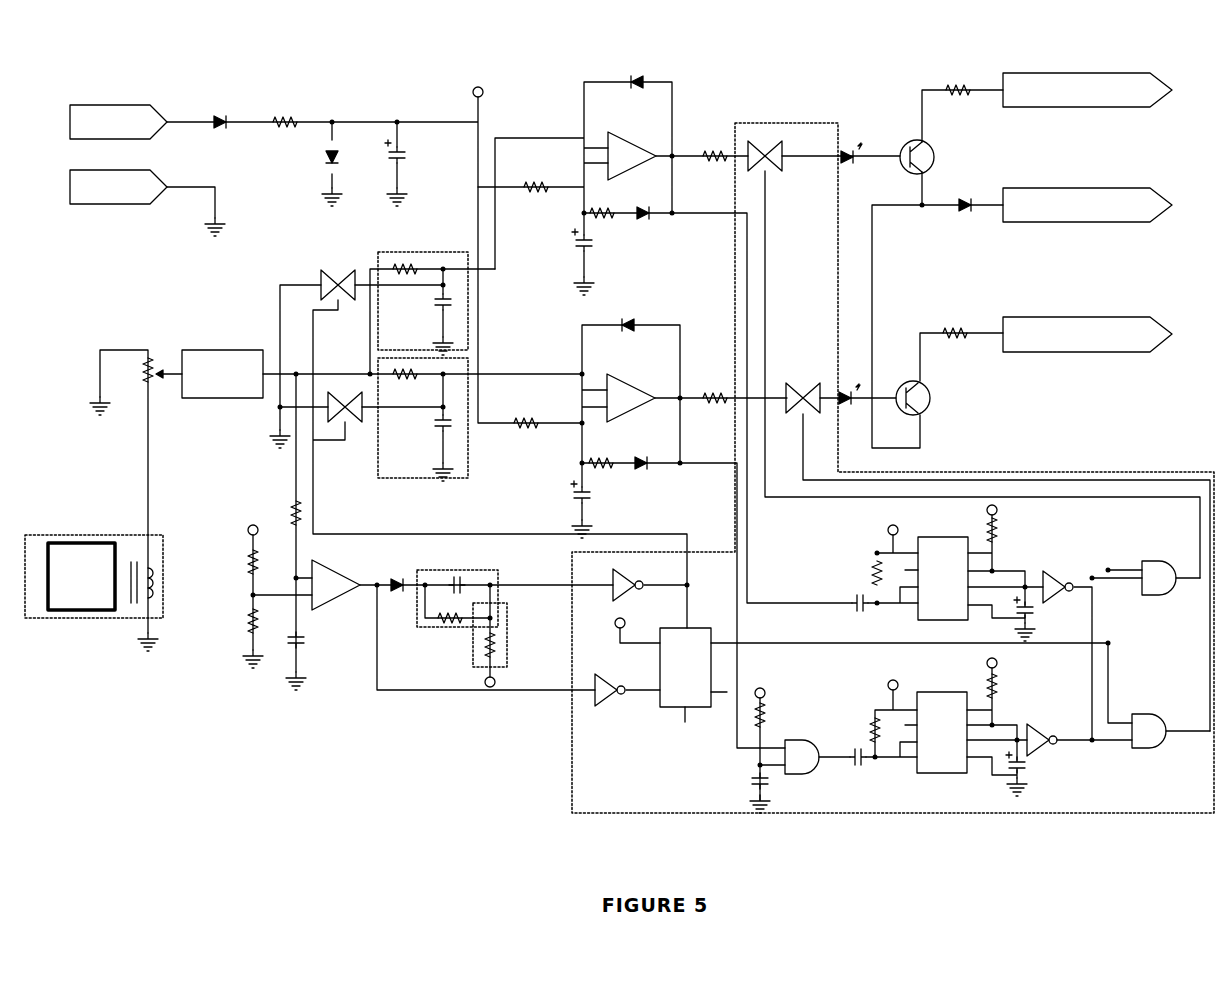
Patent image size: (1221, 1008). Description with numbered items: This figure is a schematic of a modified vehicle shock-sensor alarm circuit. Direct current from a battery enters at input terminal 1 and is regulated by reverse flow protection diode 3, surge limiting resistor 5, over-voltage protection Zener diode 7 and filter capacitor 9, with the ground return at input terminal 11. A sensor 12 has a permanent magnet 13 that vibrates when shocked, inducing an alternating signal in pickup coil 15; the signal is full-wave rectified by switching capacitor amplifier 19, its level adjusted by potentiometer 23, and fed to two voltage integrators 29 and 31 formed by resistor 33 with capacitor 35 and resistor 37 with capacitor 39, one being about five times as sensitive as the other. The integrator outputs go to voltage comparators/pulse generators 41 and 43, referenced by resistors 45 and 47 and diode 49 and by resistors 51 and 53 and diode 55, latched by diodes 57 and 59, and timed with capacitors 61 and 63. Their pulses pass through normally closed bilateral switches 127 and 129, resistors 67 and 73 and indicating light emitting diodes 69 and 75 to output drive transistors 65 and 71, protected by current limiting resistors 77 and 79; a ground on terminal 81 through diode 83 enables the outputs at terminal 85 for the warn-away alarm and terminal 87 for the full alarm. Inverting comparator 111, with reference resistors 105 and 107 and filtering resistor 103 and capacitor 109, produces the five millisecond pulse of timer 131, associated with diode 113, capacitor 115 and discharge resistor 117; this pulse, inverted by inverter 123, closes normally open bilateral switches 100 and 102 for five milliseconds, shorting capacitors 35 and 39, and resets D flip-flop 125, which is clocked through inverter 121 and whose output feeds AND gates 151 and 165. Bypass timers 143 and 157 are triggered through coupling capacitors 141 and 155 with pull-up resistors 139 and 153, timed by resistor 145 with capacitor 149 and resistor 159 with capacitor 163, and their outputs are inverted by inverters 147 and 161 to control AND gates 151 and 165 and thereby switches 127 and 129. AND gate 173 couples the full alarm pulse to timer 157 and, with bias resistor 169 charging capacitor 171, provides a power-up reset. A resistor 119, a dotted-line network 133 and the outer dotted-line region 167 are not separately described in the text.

The input terminal 1 is at (118, 122).
The reverse flow protection diode 3 is at (213, 117).
The surge limiting resistor 5 is at (278, 115).
The over-voltage protection Zener diode 7 is at (325, 160).
The filter capacitor 9 is at (405, 162).
The input terminal 11 is at (147, 203).
The sensor 12 is at (170, 532).
The permanent magnet 13 is at (81, 576).
The induction pickup coil 15 is at (155, 585).
The switching capacitor amplifier 19 is at (222, 374).
The potentiometer 23 is at (140, 366).
The voltage integrator 29 is at (468, 350).
The voltage integrator 31 is at (468, 478).
The resistor 33 is at (400, 263).
The capacitor 35 is at (450, 310).
The resistor 37 is at (400, 367).
The capacitor 39 is at (452, 430).
The voltage comparator/pulse generator 41 is at (632, 156).
The voltage comparator/pulse generator 43 is at (631, 398).
The resistor 45 is at (532, 182).
The resistor 47 is at (606, 220).
The diode 49 is at (648, 220).
The resistor 51 is at (530, 428).
The resistor 53 is at (610, 473).
The diode 55 is at (648, 473).
The diode 57 is at (633, 75).
The diode 59 is at (633, 330).
The capacitor 61 is at (590, 253).
The capacitor 63 is at (580, 494).
The output drive transistor 65 is at (905, 145).
The resistor 67 is at (715, 150).
The indicating light emitting diode 69 is at (843, 150).
The output drive transistor 71 is at (925, 410).
The resistor 73 is at (714, 393).
The indicating light emitting diode 75 is at (846, 385).
The current limiting resistor 77 is at (955, 85).
The current limiting resistor 79 is at (950, 328).
The terminal 81 is at (1087, 205).
The diode 83 is at (960, 212).
The terminal 85 is at (1087, 90).
The terminal 87 is at (1087, 334).
The bilateral switch 100 is at (318, 272).
The bilateral switch 102 is at (323, 387).
The resistor 103 is at (305, 517).
The resistor 105 is at (250, 577).
The resistor 107 is at (253, 628).
The capacitor 109 is at (300, 643).
The inverting comparator 111 is at (335, 585).
The diode 113 is at (397, 575).
The capacitor 115 is at (460, 575).
The discharge resistor 117 is at (452, 628).
The resistor 119 is at (500, 645).
The inverter 121 is at (608, 707).
The inverter 123 is at (640, 578).
The D flip-flop 125 is at (663, 662).
The analog bilateral switch 127 is at (780, 173).
The analog bilateral switch 129 is at (801, 383).
The five millisecond timer 131 is at (415, 630).
The pull-down network 133 is at (507, 670).
The pull-up resistor 139 is at (872, 565).
The coupling capacitor 141 is at (857, 596).
The warn-away bypass timer 143 is at (943, 578).
The resistor 145 is at (1002, 530).
The inverter 147 is at (1057, 570).
The timing capacitor 149 is at (1033, 612).
The AND gate 151 is at (1163, 598).
The pull-up resistor 153 is at (868, 715).
The coupling capacitor 155 is at (855, 748).
The full alarm bypass timer 157 is at (942, 732).
The resistor 159 is at (1000, 685).
The inverter 161 is at (1040, 752).
The timing capacitor 163 is at (1027, 772).
The AND gate 165 is at (1160, 750).
The timing control circuit 167 is at (572, 818).
The bias resistor 169 is at (750, 722).
The capacitor 171 is at (748, 783).
The AND gate 173 is at (815, 777).